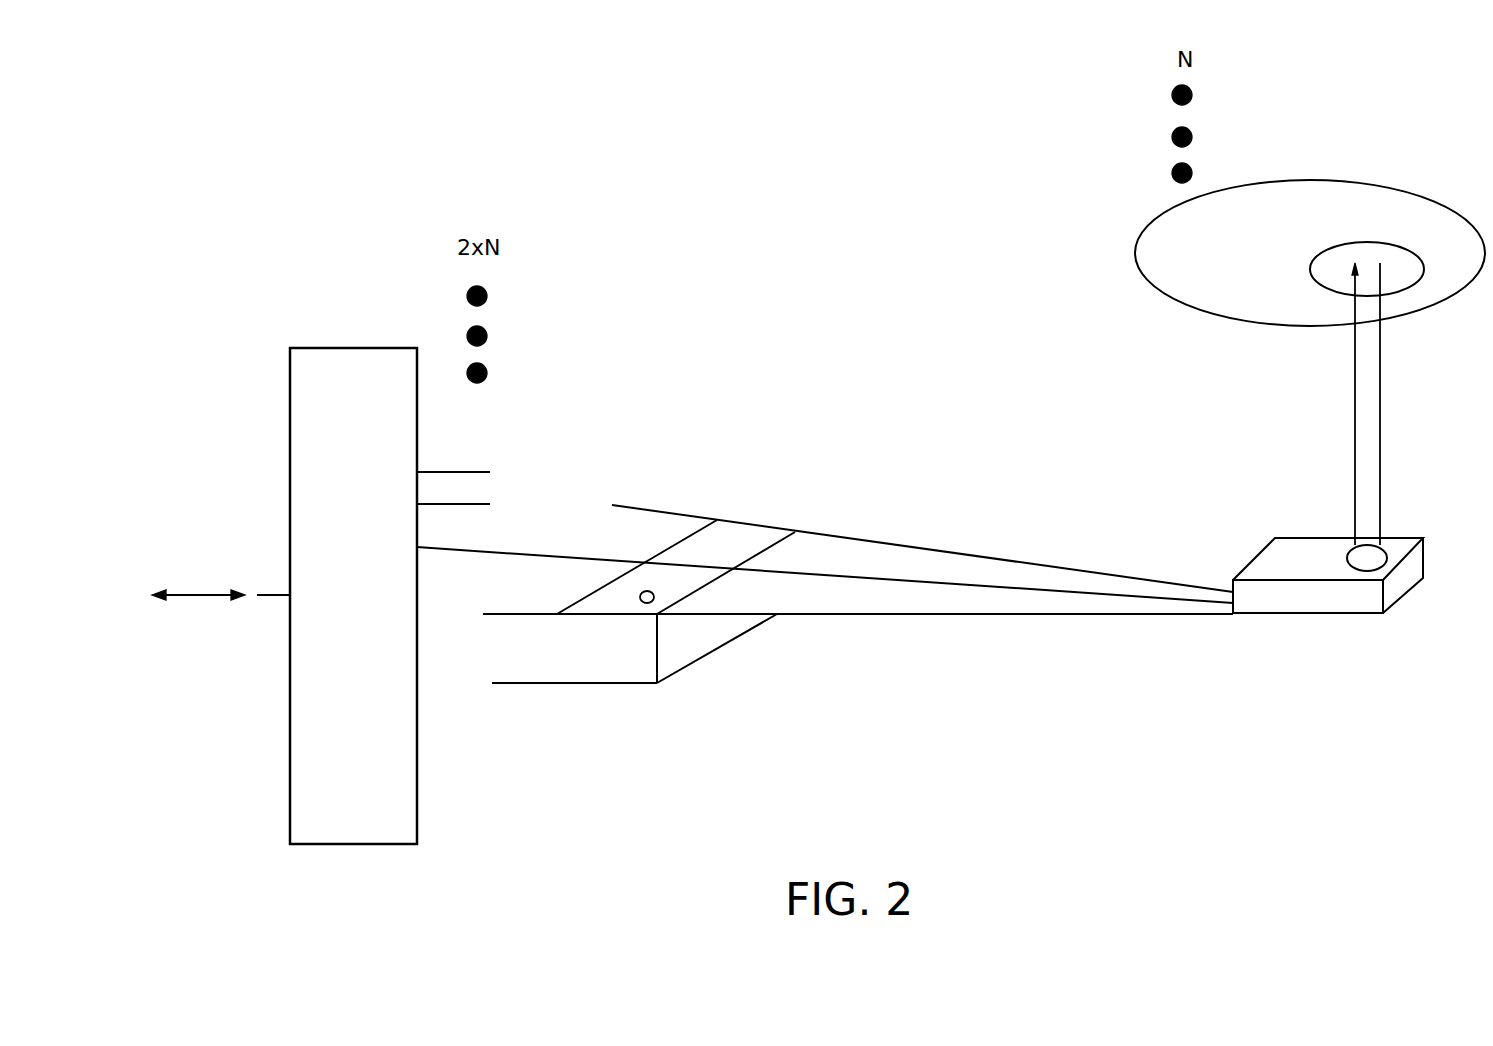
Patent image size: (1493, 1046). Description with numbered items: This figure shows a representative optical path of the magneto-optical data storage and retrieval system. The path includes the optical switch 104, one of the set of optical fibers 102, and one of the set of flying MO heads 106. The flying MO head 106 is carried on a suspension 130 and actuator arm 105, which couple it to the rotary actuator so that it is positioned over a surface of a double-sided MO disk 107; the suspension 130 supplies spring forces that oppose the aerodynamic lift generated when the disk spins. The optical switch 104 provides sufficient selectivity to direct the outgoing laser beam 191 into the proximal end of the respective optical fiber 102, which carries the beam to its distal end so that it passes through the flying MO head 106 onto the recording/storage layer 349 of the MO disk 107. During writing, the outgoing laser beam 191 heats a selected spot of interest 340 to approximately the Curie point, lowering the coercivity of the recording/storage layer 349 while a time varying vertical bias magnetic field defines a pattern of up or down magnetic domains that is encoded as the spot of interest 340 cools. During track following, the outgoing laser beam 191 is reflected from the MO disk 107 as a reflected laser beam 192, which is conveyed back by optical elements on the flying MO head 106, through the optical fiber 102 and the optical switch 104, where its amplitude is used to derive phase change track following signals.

The optical fiber 102 is at (554, 548).
The optical switch 104 is at (316, 340).
The actuator arm 105 is at (581, 695).
The flying MO head 106 is at (1347, 605).
The MO disk 107 is at (1160, 306).
The suspension 130 is at (936, 626).
The outgoing laser beam 191 is at (1335, 430).
The reflected laser beam 192 is at (1391, 478).
The selected spot of interest 340 is at (1395, 258).
The recording/storage layer 349 is at (1313, 200).